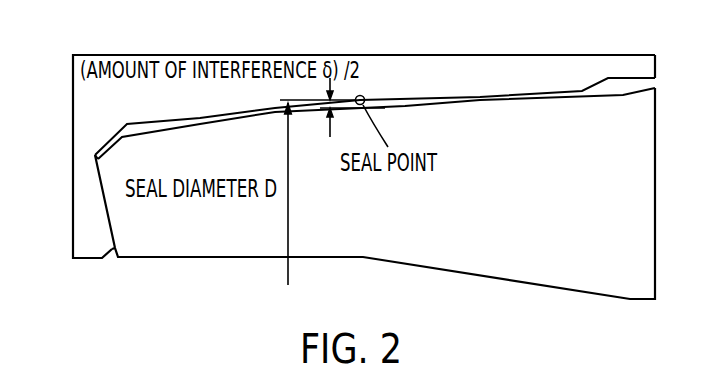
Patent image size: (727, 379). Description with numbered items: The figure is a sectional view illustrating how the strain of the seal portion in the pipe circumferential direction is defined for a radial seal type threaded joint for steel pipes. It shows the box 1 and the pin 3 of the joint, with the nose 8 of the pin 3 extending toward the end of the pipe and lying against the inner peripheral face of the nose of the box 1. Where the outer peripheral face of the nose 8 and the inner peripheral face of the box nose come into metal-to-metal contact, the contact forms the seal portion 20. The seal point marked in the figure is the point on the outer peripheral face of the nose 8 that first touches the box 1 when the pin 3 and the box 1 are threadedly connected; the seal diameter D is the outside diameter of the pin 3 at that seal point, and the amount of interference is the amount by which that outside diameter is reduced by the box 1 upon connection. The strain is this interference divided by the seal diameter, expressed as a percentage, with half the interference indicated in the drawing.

The box 1 is at (85, 113).
The pin 3 is at (628, 217).
The nose 8 is at (339, 215).
The seal portion 20 is at (417, 89).